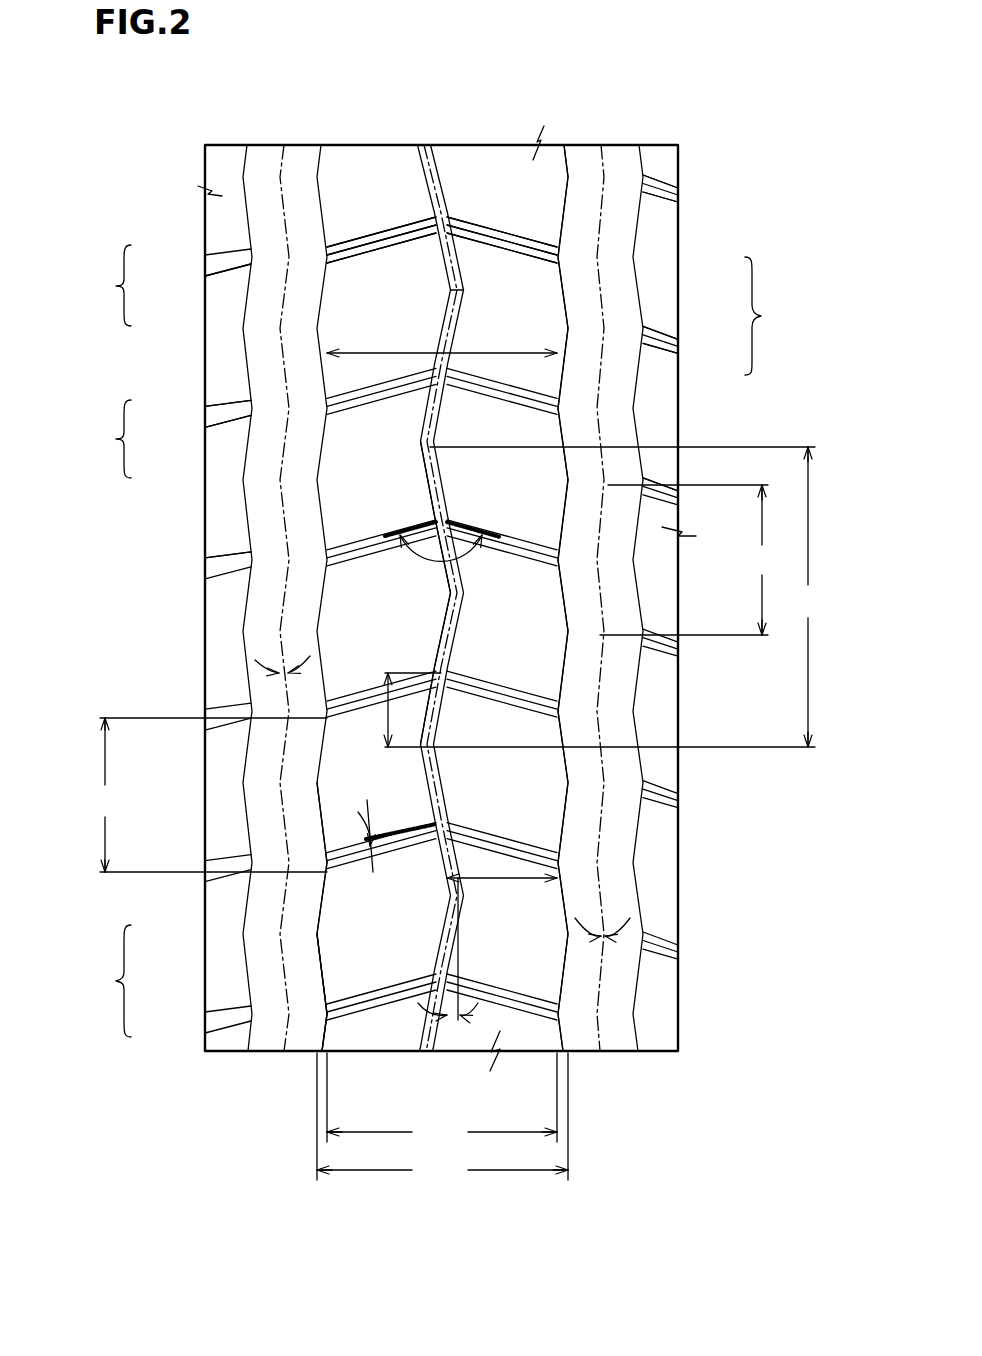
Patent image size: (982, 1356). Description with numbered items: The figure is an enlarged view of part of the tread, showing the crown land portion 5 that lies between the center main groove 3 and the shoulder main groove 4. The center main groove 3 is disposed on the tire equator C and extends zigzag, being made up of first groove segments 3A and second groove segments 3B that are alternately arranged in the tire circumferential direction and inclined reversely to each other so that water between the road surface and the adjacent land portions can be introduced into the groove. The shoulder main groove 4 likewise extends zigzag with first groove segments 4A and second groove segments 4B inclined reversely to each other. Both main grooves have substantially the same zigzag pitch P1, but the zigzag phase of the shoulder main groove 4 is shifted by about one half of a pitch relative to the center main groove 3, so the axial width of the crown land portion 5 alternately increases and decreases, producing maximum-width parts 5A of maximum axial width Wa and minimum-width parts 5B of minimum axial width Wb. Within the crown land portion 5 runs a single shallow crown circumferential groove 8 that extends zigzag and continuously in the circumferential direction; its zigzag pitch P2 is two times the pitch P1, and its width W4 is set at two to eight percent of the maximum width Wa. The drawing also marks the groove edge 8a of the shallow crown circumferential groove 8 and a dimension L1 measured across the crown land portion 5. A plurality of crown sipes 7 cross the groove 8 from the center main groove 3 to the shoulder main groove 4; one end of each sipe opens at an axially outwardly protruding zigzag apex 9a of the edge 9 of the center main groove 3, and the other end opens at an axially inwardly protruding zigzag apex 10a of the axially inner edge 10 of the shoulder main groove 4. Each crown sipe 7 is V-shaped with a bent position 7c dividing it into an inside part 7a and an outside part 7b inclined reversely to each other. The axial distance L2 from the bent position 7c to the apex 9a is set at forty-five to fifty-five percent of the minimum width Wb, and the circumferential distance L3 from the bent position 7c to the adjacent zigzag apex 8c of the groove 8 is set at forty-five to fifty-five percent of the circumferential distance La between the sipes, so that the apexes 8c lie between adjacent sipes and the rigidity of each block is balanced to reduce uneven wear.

The center main groove 3 is at (713, 567).
The first groove segments 3A is at (627, 311).
The second groove segments 3B is at (627, 363).
The shoulder main groove 4 is at (175, 641).
The first groove segments 4A is at (263, 384).
The second groove segments 4B is at (262, 447).
The crown land portion 5 is at (372, 66).
The maximum-width parts 5A is at (306, 939).
The minimum-width parts 5B is at (306, 1021).
The crown sipes 7 is at (708, 416).
The inside part 7a is at (447, 304).
The outside part 7b is at (366, 264).
The bent position 7c is at (453, 208).
The shallow crown circumferential groove 8 is at (443, 252).
The groove edge of center main groove 8a is at (437, 185).
The zigzag apexes 8c is at (418, 452).
The edge 9 is at (566, 150).
The zigzag apexes 9a is at (563, 257).
The axially inner edge 10 is at (250, 198).
The zigzag apexes 10a is at (291, 165).
The tire equator C is at (602, 145).
The width W4 is at (470, 308).
The length L1 is at (327, 353).
The axial distance L2 is at (520, 879).
The circumferential distance L3 is at (388, 692).
The circumferential distance La is at (208, 795).
The zigzag pitch P1 is at (689, 560).
The zigzag pitch P2 is at (604, 597).
The maximum axial width Wa is at (442, 1118).
The minimum axial width Wb is at (442, 1099).